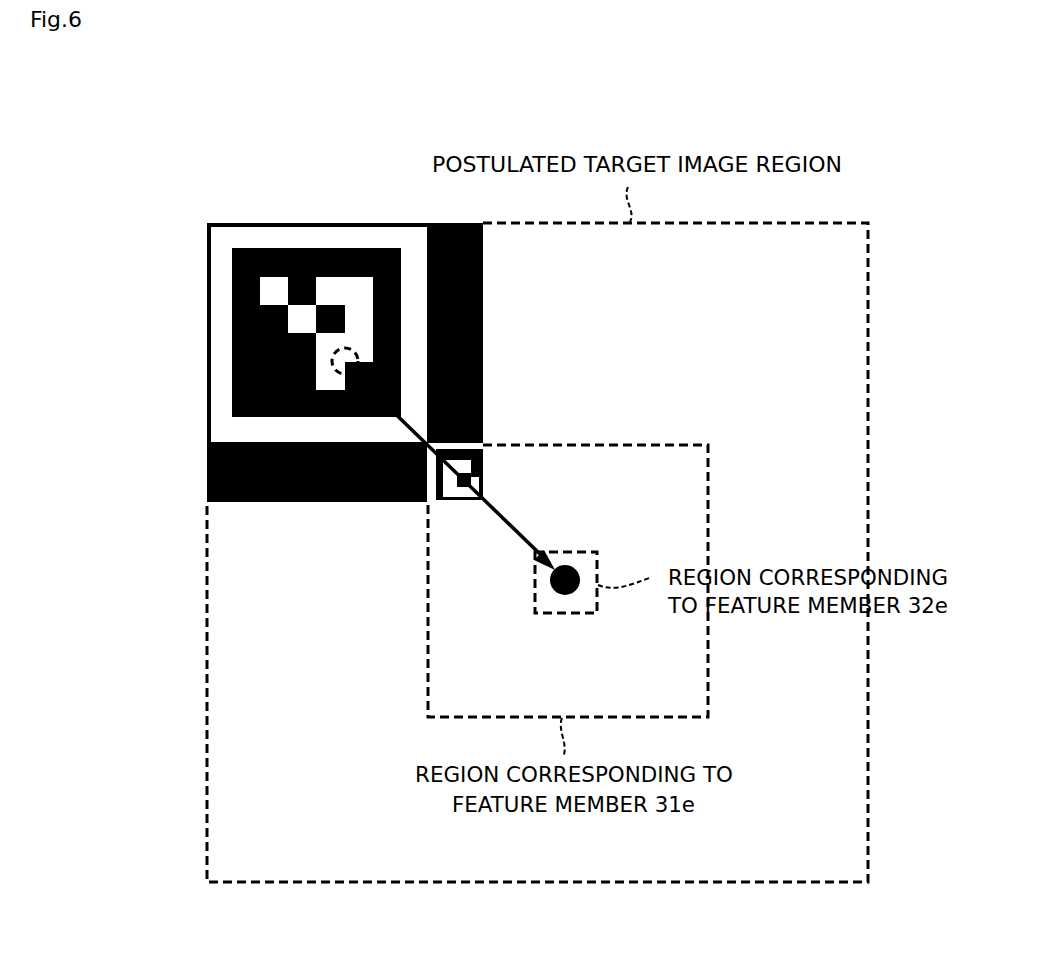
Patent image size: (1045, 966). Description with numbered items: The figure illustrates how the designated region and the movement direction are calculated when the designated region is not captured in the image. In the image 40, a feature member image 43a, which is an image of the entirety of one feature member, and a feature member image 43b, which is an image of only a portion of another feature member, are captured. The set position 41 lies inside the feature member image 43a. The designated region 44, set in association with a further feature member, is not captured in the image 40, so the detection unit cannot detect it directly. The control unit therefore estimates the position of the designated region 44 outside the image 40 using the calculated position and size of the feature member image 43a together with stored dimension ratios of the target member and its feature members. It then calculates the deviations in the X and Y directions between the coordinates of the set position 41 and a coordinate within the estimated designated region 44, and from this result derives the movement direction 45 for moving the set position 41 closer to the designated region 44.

The image 40 is at (346, 222).
The set position 41 is at (358, 357).
The feature member image 43a is at (207, 334).
The feature member image 43b is at (483, 460).
The designated region 44 is at (578, 570).
The movement direction 45 is at (513, 533).